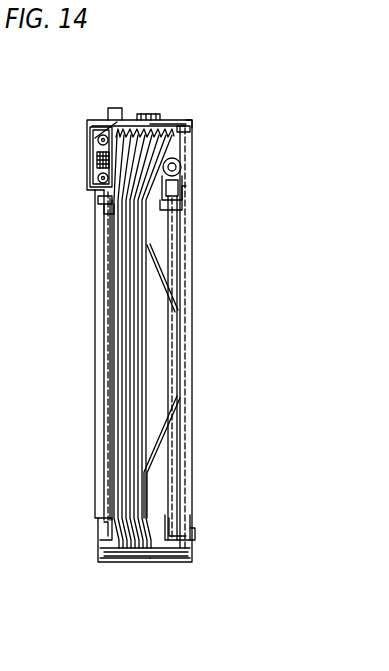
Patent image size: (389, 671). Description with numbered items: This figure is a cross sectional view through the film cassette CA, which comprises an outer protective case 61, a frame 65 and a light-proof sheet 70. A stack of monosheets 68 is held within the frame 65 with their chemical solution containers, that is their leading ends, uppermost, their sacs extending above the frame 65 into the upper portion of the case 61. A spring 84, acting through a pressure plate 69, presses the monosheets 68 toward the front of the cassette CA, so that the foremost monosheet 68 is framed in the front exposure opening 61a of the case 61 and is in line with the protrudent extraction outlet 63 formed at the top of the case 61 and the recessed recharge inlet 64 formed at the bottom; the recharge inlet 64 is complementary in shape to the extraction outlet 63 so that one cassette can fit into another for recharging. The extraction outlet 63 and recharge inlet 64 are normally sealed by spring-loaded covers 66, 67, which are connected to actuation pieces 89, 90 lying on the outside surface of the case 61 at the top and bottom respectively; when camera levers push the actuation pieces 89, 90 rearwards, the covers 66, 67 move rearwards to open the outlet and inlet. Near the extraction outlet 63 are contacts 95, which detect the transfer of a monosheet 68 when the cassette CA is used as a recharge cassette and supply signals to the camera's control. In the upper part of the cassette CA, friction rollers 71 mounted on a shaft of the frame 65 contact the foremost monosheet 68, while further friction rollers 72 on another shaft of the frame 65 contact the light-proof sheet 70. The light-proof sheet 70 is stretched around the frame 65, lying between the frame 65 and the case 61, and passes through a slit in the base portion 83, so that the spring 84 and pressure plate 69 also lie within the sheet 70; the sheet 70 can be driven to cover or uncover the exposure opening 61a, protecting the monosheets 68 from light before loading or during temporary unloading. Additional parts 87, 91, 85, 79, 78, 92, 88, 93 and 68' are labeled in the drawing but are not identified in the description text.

The extraction outlet 63 is at (113, 112).
The actuation piece 89 is at (143, 114).
The comb-shaped conductor ends 87 is at (152, 126).
The cover 66 is at (160, 124).
The top right corner member 91 is at (188, 124).
The right upper block 85 is at (184, 132).
The roller mount 79 is at (180, 158).
The roller 78 is at (181, 175).
The friction rollers 72 is at (183, 204).
The monosheets 68 is at (180, 341).
The base portion 83 is at (190, 250).
The pressure plate 69 is at (142, 297).
The film cassette CA is at (192, 363).
The spring 84 is at (160, 445).
The bottom right bracket 92 is at (188, 530).
The bottom right tab 88 is at (186, 553).
The cover 67 is at (172, 560).
The actuation piece 90 is at (160, 560).
The recharge inlet 64 is at (110, 560).
The bottom left bracket 93 is at (100, 546).
The light-proof sheet 70 is at (104, 393).
The front exposure opening 61a is at (103, 310).
The inner conductor lines 68' is at (78, 359).
The outer protective case 61 is at (102, 212).
The frame 65 is at (102, 202).
The contacts 95 is at (98, 162).
The friction rollers 71 is at (93, 138).